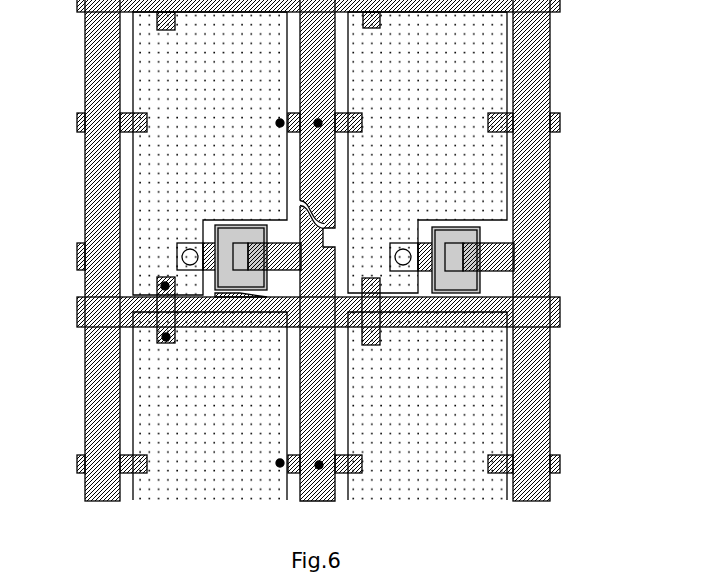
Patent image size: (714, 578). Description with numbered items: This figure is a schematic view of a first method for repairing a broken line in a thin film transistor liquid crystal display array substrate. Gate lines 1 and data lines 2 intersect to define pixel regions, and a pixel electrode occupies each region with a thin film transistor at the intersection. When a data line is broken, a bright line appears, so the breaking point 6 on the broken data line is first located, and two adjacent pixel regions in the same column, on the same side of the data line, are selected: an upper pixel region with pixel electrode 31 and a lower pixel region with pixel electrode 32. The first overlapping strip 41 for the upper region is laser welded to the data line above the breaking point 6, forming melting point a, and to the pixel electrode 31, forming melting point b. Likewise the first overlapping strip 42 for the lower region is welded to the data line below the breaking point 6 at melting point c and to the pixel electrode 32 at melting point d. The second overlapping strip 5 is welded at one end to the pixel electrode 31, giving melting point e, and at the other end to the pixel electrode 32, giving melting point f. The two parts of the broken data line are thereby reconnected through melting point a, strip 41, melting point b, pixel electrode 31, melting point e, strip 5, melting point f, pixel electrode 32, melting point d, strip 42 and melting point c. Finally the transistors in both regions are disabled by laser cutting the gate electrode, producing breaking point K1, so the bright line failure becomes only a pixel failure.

The gate line 1 is at (290, 262).
The data line 2 is at (558, 250).
The pixel electrode within the upper pixel region 31 is at (154, 149).
The pixel electrode within the lower pixel region 32 is at (154, 406).
The first overlapping strip for the upper pixel region 41 is at (295, 125).
The first overlapping strip for the lower pixel region 42 is at (295, 465).
The second overlapping strip 5 is at (192, 317).
The breaking point 6 is at (353, 193).
The breaking point of the gate electrode K1 is at (238, 229).
The melting point a is at (345, 84).
The melting point b is at (253, 83).
The melting point c is at (345, 427).
The melting point d is at (252, 425).
The melting point e is at (138, 246).
The melting point f is at (138, 363).